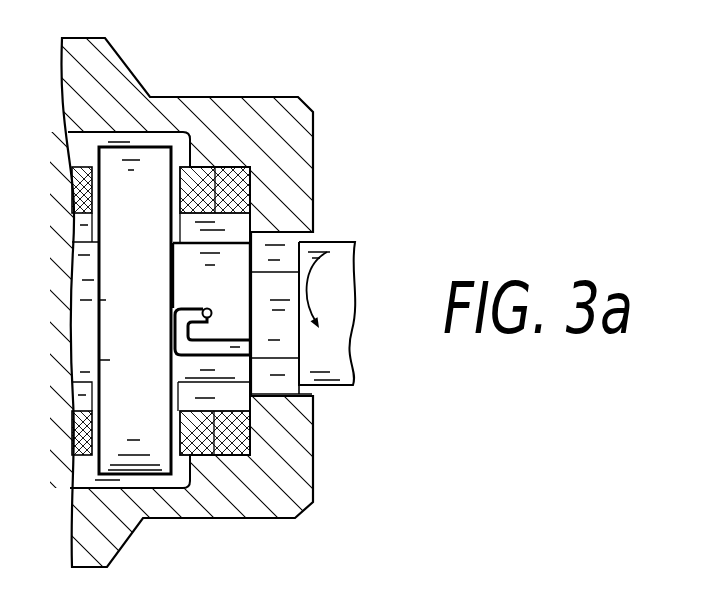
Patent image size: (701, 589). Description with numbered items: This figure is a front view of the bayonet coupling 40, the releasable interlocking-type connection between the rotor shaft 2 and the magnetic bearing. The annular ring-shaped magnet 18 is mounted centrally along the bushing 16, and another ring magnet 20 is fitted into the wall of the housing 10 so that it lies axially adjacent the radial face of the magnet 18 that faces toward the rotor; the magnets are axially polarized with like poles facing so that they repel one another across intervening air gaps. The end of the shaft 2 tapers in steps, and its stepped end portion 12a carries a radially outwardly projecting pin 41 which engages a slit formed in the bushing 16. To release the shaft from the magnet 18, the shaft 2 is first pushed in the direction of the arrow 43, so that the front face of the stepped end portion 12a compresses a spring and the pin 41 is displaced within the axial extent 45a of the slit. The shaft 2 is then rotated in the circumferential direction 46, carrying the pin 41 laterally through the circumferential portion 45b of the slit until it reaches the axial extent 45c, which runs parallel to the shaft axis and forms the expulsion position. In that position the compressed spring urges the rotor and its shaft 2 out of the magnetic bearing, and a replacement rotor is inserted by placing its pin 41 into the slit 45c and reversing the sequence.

The housing 10 is at (80, 47).
The annular ring-shaped magnet 18 is at (157, 158).
The bushing 16 is at (220, 260).
The rotor shaft 2 is at (349, 250).
The circumferential direction 46 is at (310, 289).
The arrow 43 is at (316, 346).
The stepped end portion of the shaft 12a is at (283, 337).
The bayonet coupling 40 is at (158, 302).
The pin 41 is at (208, 306).
The axial extent of the slit 45a is at (180, 318).
The circumferential portion of the slit 45b is at (181, 337).
The axial extent of the slit 45c is at (203, 348).
The ring magnet 20 is at (220, 447).